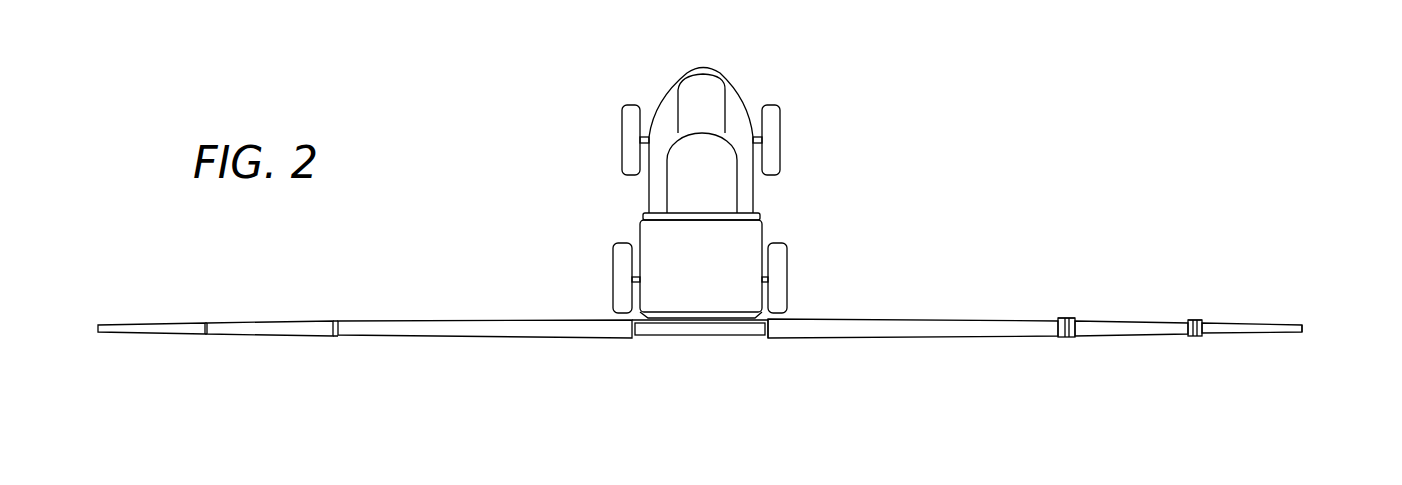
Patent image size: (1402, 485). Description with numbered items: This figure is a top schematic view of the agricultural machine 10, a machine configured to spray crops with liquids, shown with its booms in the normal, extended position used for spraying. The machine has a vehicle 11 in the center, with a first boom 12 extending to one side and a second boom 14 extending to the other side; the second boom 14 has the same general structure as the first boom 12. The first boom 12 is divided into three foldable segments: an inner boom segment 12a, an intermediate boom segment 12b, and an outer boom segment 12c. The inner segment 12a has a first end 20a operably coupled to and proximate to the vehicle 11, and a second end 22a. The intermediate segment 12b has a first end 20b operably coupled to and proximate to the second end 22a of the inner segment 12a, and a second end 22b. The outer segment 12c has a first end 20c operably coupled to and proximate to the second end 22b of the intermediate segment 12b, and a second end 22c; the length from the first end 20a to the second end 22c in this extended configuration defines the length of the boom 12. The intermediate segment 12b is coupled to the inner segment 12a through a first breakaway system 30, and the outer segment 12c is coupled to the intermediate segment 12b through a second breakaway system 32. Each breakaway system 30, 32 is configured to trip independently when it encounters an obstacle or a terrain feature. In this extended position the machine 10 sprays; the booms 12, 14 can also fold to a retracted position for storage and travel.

The agricultural machine 10 is at (947, 100).
The vehicle 11 is at (703, 70).
The first boom 12 is at (998, 390).
The inner boom segment 12a is at (932, 320).
The intermediate boom segment 12b is at (1132, 323).
The outer boom segment 12c is at (1252, 323).
The second boom 14 is at (425, 267).
The first end of inner segment 20a is at (770, 357).
The first end of intermediate segment 20b is at (1077, 343).
The first end of outer segment 20c is at (1202, 347).
The second end of inner segment 22a is at (1057, 315).
The second end of intermediate segment 22b is at (1187, 310).
The second end of outer segment 22c is at (1302, 315).
The first breakaway system 30 is at (1065, 337).
The second breakaway system 32 is at (1197, 337).